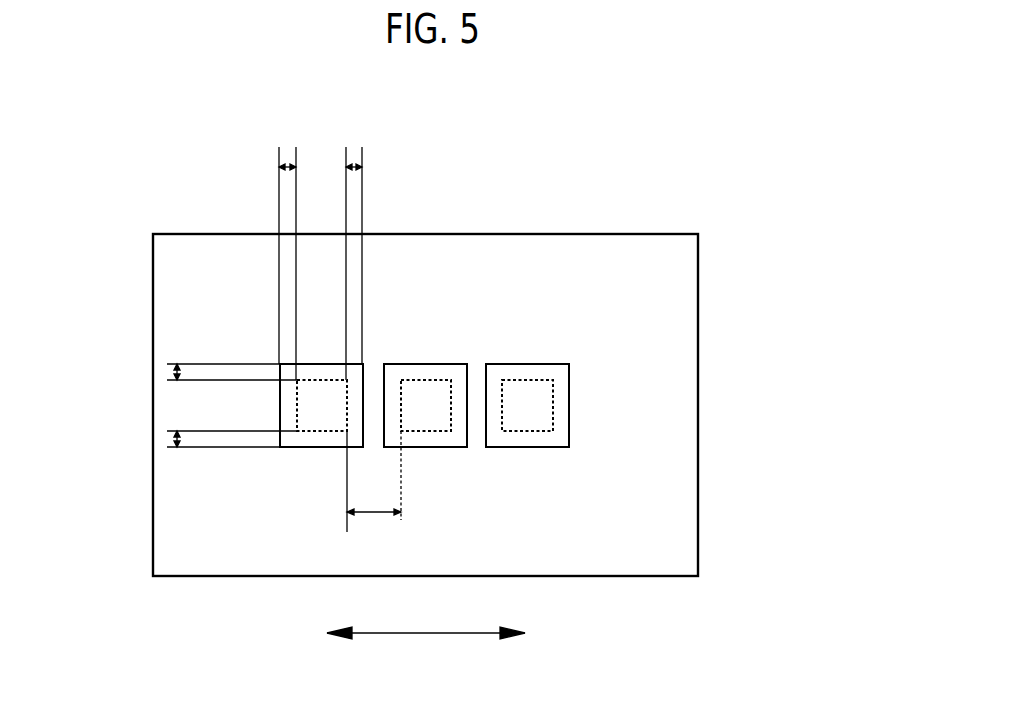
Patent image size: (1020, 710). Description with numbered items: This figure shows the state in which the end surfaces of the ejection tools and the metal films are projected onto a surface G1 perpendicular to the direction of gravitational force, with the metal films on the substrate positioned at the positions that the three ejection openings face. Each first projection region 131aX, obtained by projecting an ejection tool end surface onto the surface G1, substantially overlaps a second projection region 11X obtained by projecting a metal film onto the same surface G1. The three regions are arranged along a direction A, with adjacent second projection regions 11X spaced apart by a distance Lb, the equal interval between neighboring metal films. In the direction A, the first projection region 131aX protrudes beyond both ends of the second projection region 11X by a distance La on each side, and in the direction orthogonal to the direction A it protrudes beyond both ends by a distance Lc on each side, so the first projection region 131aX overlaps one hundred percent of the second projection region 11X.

The surface perpendicular to the direction of gravitational force G1 is at (687, 462).
The first projection region 131aX is at (320, 447).
The second projection region 11X is at (307, 432).
The distance La is at (291, 165).
The distance Lb is at (375, 515).
The distance Lc is at (177, 372).
The direction A is at (426, 615).